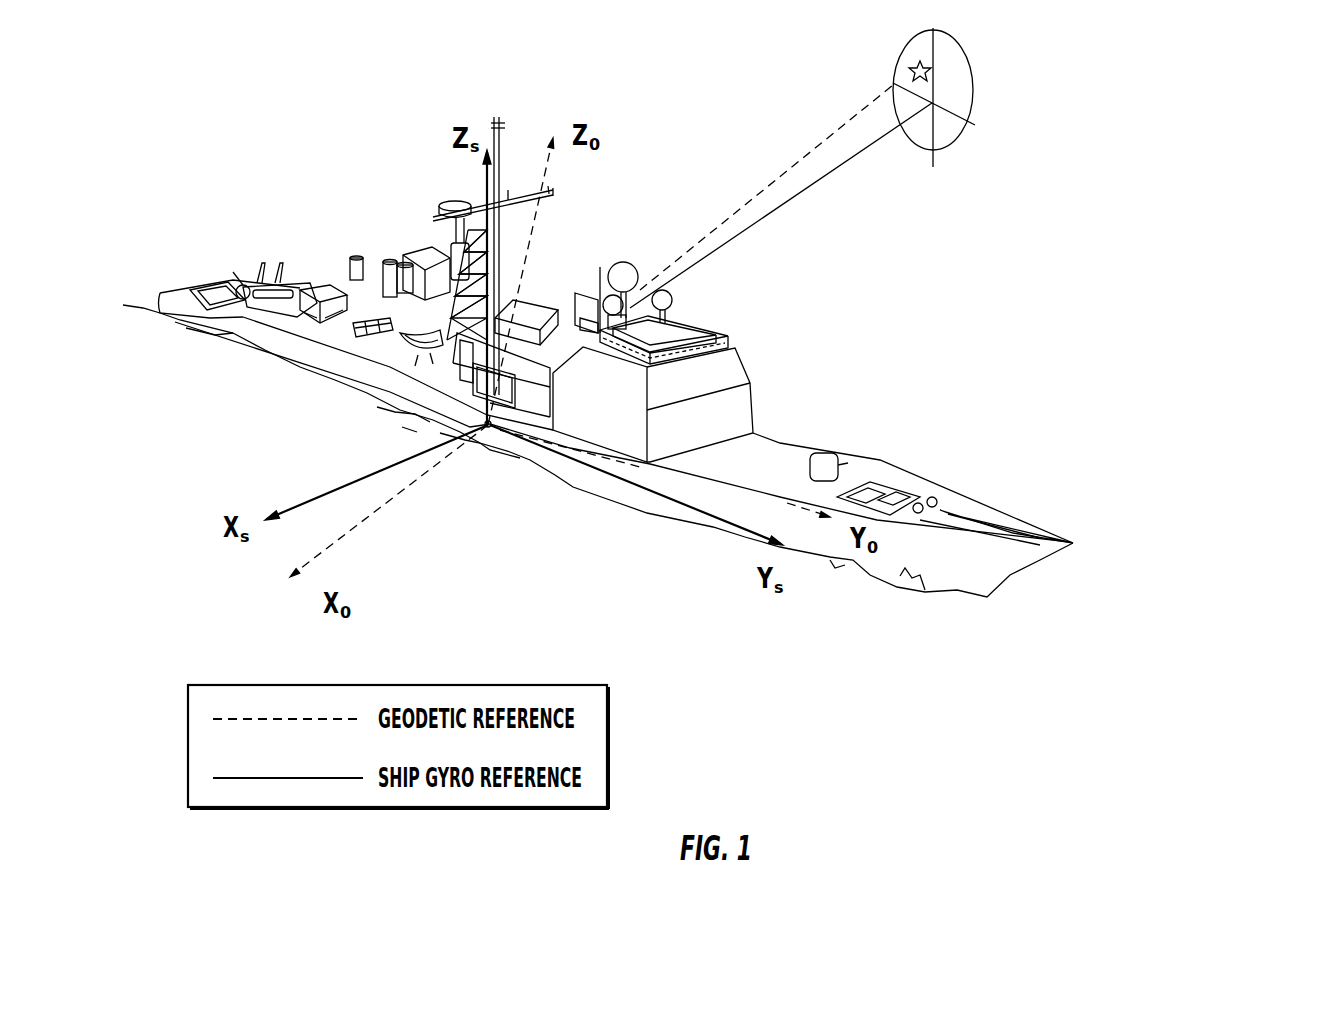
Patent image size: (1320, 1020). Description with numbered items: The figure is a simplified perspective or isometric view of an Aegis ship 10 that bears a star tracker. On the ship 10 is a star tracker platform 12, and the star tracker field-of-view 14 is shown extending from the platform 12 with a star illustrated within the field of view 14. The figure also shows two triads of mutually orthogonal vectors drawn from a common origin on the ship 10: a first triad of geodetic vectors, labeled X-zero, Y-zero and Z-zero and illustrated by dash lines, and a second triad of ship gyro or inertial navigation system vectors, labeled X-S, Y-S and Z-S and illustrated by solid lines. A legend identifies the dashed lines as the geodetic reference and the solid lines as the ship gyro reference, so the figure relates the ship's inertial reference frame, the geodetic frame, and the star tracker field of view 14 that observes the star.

The Aegis ship 10 is at (662, 615).
The star tracker platform 12 is at (590, 337).
The star tracker field-of-view 14 is at (982, 106).